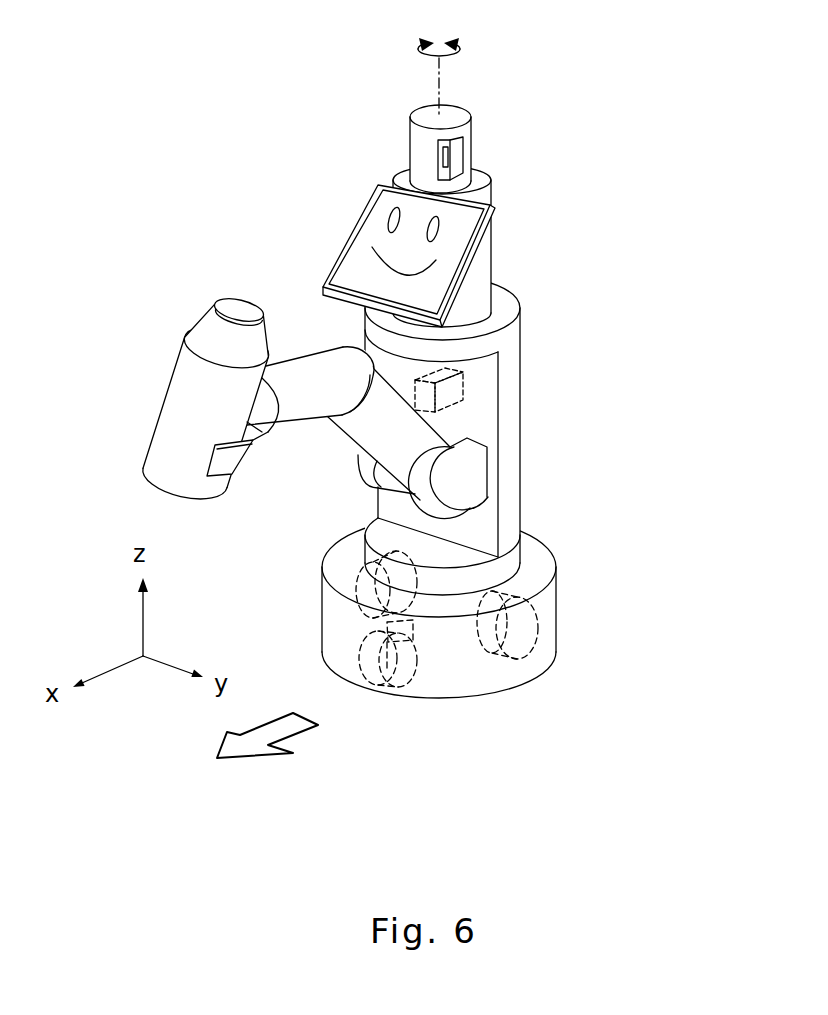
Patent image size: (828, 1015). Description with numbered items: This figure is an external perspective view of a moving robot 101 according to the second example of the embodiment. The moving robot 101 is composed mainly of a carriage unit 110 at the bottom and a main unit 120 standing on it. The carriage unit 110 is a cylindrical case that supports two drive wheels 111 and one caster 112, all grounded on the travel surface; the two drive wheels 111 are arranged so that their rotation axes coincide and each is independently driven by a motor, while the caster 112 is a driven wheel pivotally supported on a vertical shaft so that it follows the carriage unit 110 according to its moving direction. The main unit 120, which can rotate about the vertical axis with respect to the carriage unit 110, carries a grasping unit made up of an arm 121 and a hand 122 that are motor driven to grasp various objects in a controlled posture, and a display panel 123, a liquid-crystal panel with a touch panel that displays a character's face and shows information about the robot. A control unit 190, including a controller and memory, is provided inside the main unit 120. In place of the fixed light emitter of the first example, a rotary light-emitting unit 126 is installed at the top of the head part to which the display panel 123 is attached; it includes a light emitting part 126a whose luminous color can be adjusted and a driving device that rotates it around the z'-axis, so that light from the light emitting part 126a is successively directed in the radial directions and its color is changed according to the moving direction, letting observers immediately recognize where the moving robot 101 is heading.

The moving robot 101 is at (422, 397).
The carriage unit 110 is at (548, 600).
The drive wheel 111 is at (352, 589).
The caster 112 is at (396, 678).
The main unit 120 is at (508, 472).
The arm 121 is at (373, 427).
The hand 122 is at (233, 462).
The display panel 123 is at (383, 202).
The rotary light-emitting unit 126 is at (415, 136).
The light emitting part 126a is at (457, 148).
The control unit 190 is at (455, 395).